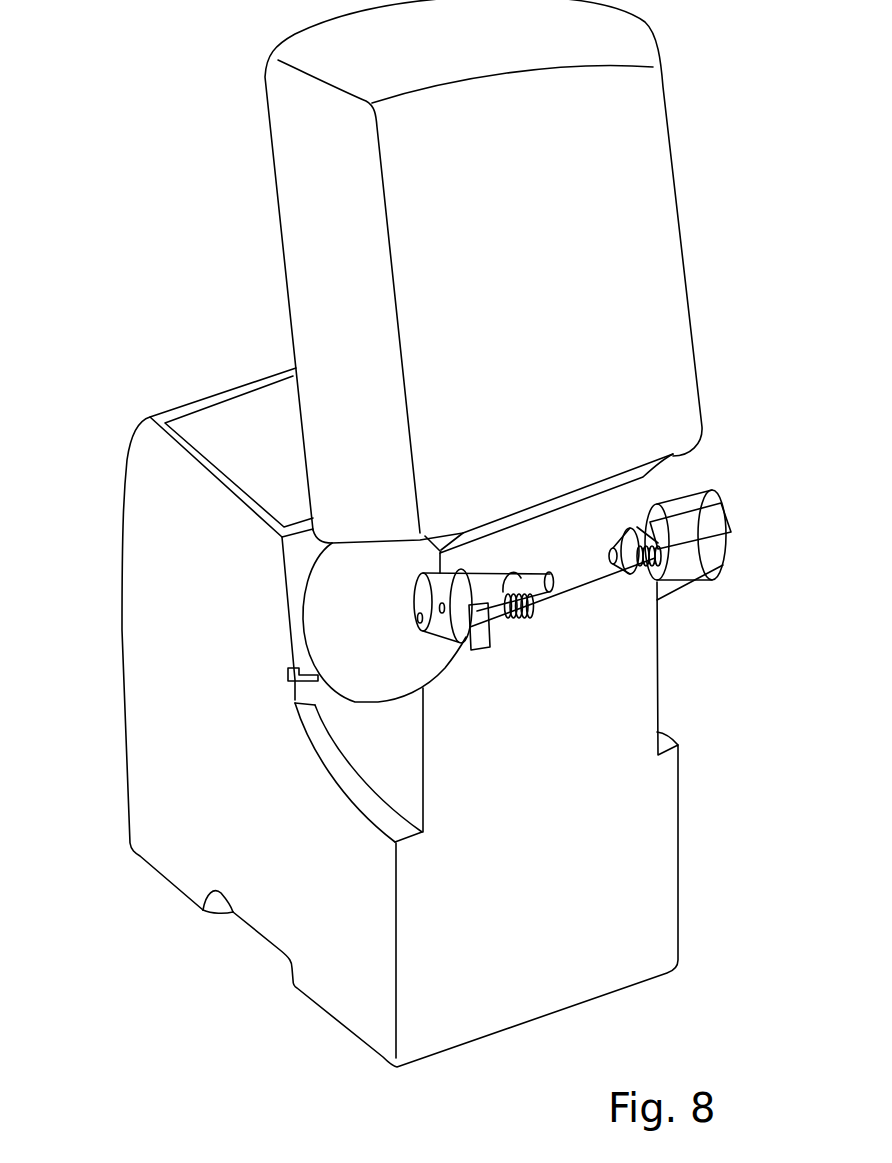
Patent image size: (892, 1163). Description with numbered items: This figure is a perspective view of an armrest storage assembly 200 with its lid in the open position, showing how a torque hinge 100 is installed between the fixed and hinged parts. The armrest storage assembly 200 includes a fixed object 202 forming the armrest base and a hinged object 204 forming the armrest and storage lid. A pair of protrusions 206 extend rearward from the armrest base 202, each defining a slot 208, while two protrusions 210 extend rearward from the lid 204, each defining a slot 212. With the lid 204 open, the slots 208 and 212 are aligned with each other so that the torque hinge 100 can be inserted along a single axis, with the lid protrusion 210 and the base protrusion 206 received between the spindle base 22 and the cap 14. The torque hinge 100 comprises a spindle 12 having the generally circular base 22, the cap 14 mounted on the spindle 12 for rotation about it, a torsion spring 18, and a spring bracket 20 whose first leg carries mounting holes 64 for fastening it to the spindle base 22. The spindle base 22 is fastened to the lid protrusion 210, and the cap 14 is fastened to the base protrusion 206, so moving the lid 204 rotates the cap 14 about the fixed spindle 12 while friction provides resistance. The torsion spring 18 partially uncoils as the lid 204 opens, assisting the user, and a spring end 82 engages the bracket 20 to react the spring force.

The armrest storage assembly 200 is at (427, 533).
The hinged object 204 is at (300, 168).
The fixed object 202 is at (650, 935).
The hinge assembly 100 is at (574, 613).
The base 22 is at (440, 645).
The mounting holes 64 is at (417, 615).
The spring bracket 20 is at (468, 612).
The spindle 12 is at (538, 577).
The torsion spring 18 is at (518, 618).
The cap 14 is at (505, 630).
The spring 82 is at (633, 578).
The protrusions 206 is at (683, 572).
The slot 208 is at (682, 540).
The slot 212 is at (713, 540).
The protrusions 210 is at (705, 556).